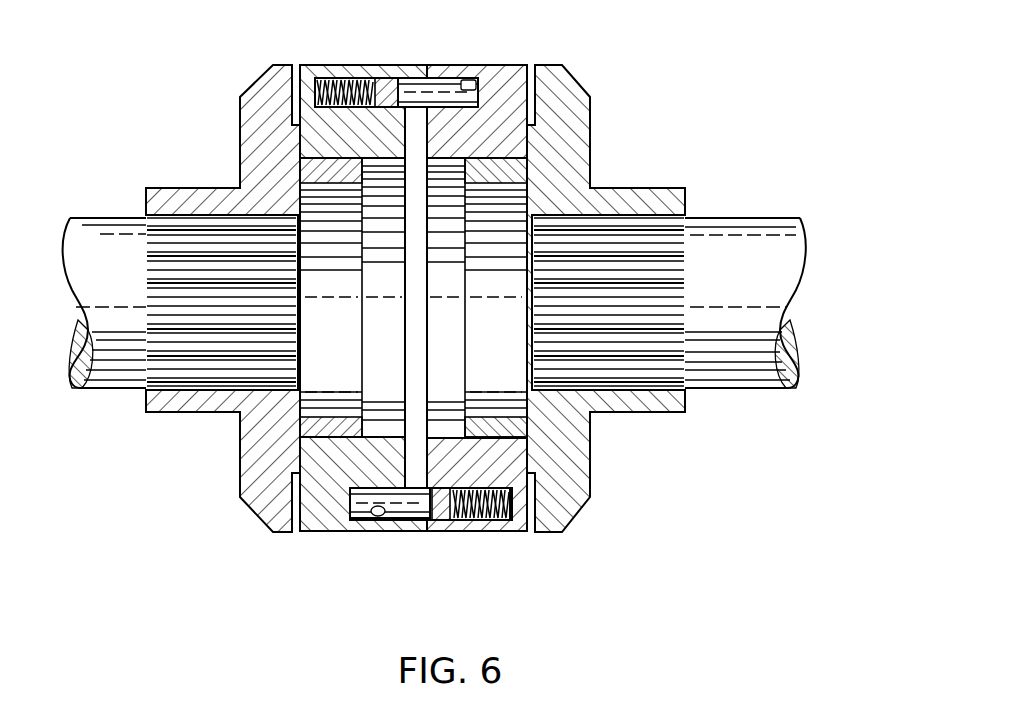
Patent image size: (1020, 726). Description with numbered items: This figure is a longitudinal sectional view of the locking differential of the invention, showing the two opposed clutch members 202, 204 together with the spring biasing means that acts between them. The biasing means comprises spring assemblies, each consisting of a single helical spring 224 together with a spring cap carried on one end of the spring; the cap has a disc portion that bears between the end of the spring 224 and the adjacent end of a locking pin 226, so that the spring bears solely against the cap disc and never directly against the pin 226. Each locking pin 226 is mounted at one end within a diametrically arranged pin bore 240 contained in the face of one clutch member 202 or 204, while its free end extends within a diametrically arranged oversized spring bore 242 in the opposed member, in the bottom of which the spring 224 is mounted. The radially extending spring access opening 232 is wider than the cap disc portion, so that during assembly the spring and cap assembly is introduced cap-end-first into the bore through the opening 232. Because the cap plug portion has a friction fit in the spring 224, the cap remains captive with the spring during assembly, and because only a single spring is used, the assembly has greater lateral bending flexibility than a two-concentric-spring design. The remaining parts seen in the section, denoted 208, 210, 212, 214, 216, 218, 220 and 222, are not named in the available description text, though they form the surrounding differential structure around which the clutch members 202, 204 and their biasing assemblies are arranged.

The clutch member 202 is at (296, 124).
The clutch member 204 is at (515, 110).
The first hub 208 is at (231, 99).
The second hub 210 is at (697, 419).
The first shaft 212 is at (93, 232).
The second shaft 214 is at (750, 240).
The thrust ring 216 is at (252, 151).
The thrust ring 218 is at (528, 147).
The thrust ring 220 is at (300, 423).
The thrust ring 222 is at (533, 433).
The helical spring 224 is at (338, 78).
The locking pin 226 is at (437, 85).
The spring access opening 232 is at (360, 72).
The pin bore 240 is at (468, 72).
The spring bore 242 is at (512, 506).